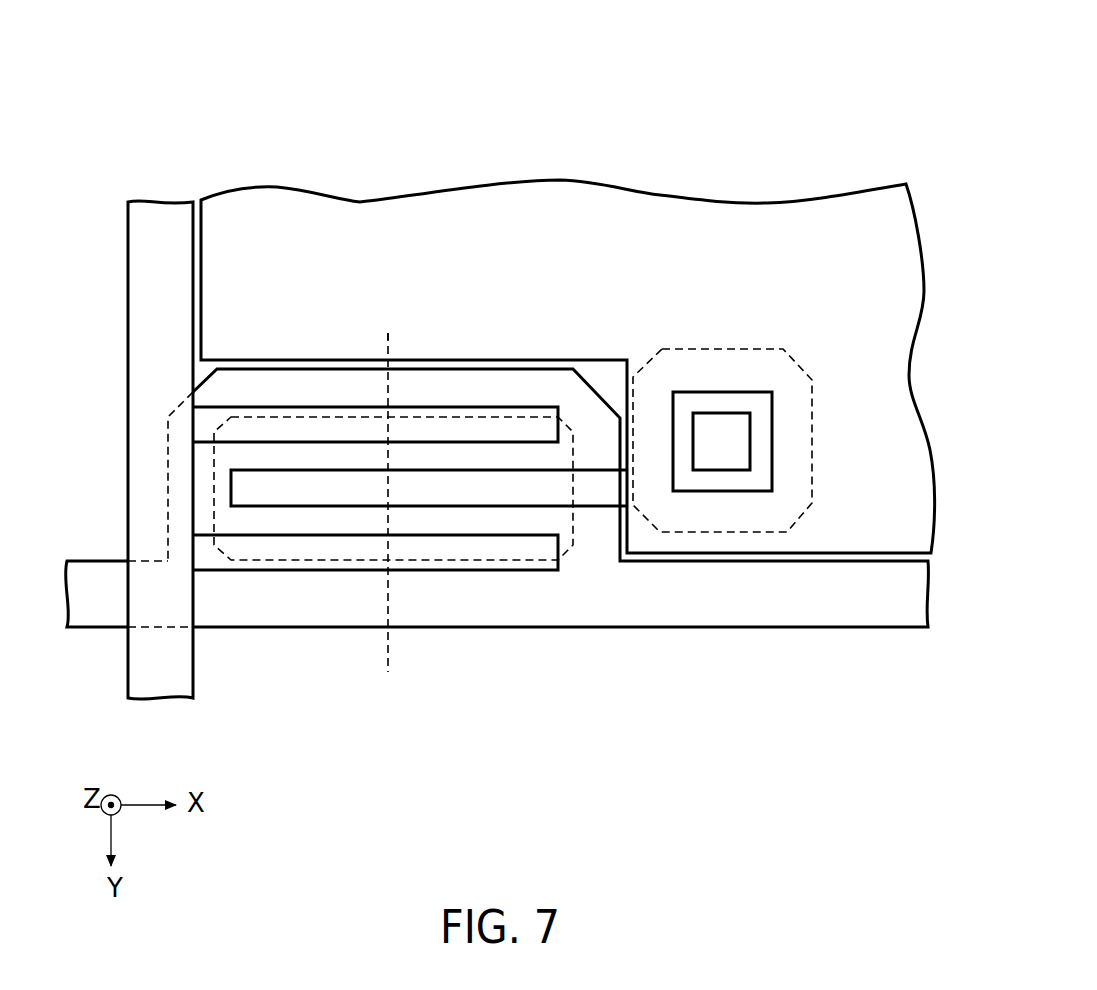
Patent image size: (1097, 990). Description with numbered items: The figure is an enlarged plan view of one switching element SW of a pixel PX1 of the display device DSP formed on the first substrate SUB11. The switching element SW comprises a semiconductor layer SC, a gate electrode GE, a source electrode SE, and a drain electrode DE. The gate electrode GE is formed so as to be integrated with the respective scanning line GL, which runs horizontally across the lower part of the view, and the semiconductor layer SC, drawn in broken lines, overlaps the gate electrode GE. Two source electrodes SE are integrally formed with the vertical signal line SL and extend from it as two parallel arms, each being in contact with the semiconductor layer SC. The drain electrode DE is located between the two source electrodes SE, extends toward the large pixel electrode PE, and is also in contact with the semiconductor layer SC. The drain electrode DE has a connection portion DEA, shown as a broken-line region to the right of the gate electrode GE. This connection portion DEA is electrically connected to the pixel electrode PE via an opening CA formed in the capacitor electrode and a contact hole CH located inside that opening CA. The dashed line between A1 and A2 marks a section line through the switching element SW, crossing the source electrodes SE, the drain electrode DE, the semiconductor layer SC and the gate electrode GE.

The first substrate SUB11 is at (727, 81).
The display device DSP is at (864, 78).
The pixel PX1 is at (717, 171).
The pixel electrode PE is at (600, 203).
The switching element SW is at (480, 350).
The gate electrode GE is at (298, 368).
The source electrode SE is at (547, 533).
The drain electrode DE is at (500, 470).
The semiconductor layer SC is at (574, 547).
The connection portion DEA is at (812, 390).
The opening CA is at (772, 421).
The contact hole CH is at (750, 460).
The scanning line GL is at (96, 573).
The signal line SL is at (160, 680).
The section line end A1 is at (387, 518).
The section line end A2 is at (388, 322).